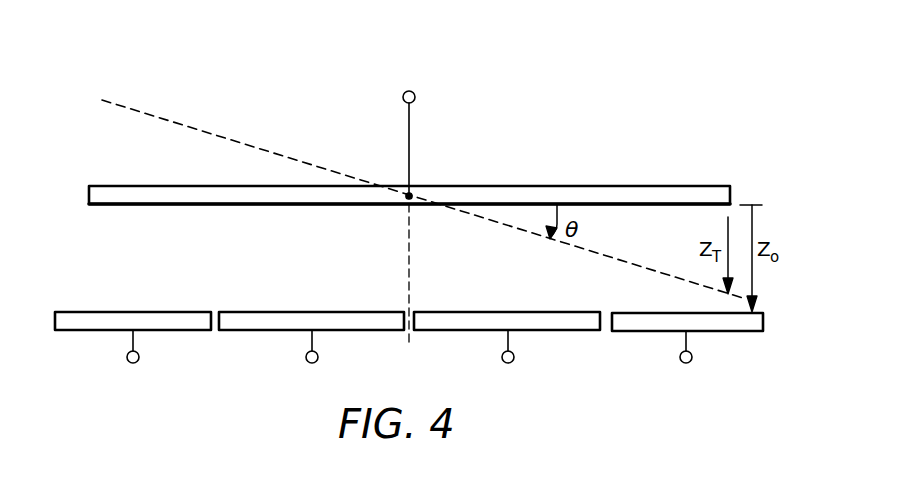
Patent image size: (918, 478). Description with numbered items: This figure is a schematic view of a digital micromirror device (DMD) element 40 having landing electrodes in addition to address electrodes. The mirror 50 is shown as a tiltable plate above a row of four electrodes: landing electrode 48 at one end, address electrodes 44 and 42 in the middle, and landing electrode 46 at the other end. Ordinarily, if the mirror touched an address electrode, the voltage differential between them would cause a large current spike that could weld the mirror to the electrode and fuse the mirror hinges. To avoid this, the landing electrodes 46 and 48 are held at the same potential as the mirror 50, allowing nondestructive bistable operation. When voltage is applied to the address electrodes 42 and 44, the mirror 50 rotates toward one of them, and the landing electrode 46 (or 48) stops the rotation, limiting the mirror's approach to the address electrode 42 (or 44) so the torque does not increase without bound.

The element 40 is at (542, 134).
The mirror 50 is at (639, 186).
The landing electrode 48 is at (131, 312).
The address electrode 44 is at (310, 312).
The address electrode 42 is at (508, 312).
The landing electrode 46 is at (722, 331).